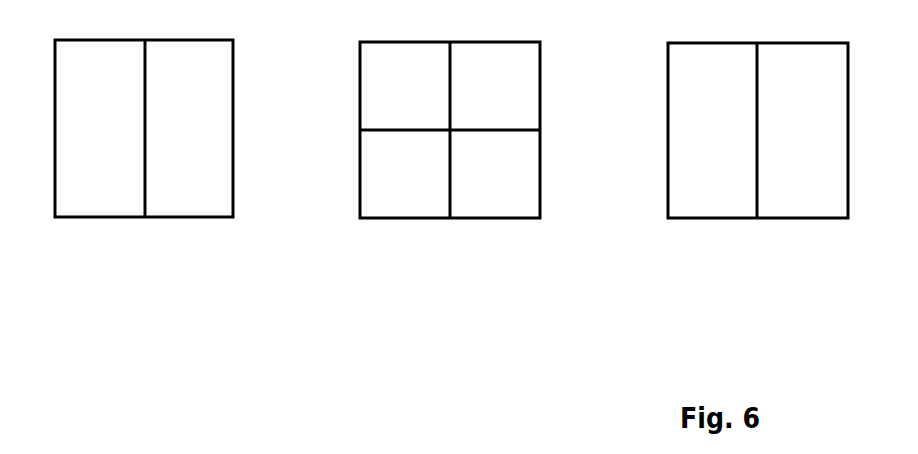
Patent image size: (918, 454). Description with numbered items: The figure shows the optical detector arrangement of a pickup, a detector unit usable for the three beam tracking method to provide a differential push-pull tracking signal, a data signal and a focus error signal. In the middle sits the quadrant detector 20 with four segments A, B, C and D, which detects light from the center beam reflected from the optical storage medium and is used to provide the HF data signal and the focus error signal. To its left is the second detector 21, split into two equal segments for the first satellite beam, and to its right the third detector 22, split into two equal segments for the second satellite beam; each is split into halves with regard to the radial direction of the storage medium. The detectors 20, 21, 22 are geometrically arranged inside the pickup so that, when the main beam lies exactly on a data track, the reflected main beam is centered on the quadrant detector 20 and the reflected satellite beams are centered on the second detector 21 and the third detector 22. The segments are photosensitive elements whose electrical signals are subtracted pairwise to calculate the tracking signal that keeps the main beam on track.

The quadrant detector 20 is at (415, 225).
The second detector 21 is at (182, 225).
The third detector 22 is at (733, 225).